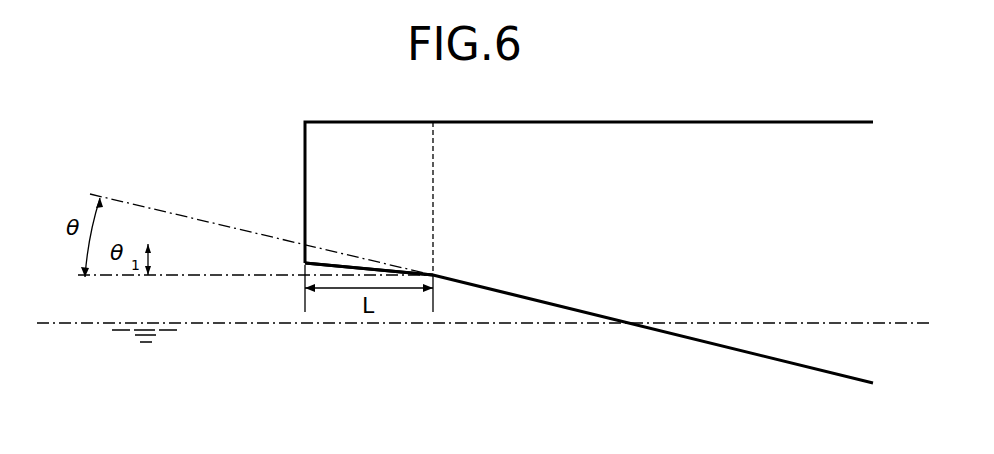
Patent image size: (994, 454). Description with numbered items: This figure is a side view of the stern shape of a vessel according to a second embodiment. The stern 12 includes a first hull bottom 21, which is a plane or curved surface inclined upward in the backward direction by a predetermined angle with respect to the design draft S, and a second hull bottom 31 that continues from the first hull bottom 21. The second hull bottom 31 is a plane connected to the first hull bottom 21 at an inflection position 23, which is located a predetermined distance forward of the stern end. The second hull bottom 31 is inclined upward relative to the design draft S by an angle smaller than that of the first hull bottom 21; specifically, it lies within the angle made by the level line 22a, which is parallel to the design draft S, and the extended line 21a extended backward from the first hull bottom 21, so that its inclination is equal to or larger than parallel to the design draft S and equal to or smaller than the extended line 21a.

The stern 12 is at (582, 198).
The first hull bottom 21 is at (587, 313).
The extended line 21a is at (155, 210).
The level line 22a is at (210, 277).
The inflection position 23 is at (433, 277).
The second hull bottom 31 is at (337, 265).
The design draft S is at (72, 323).